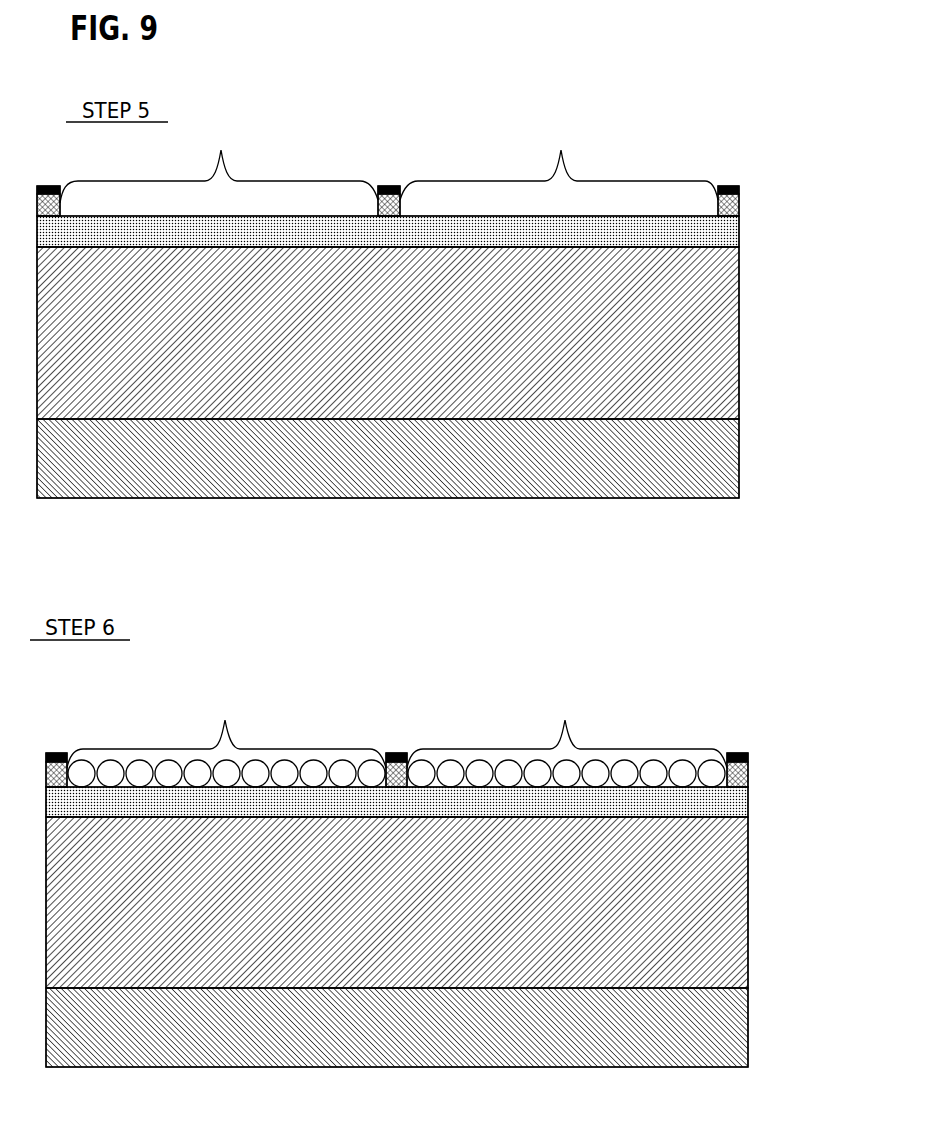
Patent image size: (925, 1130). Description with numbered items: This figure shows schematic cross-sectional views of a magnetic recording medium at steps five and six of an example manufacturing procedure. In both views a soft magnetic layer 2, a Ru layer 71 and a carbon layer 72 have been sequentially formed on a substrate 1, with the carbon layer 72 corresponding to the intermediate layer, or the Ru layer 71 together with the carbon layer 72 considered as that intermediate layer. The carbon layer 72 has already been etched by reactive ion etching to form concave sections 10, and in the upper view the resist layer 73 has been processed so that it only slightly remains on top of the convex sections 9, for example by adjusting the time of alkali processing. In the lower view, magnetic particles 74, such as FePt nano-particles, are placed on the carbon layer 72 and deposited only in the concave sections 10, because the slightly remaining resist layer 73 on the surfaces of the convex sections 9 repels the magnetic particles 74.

The substrate 1 is at (702, 447).
The soft magnetic layer 2 is at (702, 325).
The convex section 9 is at (48, 755).
The concave section 10 is at (393, 449).
The Ru layer 71 is at (688, 228).
The carbon layer 72 is at (740, 200).
The resist layer 73 is at (724, 186).
The magnetic particles 74 is at (655, 772).